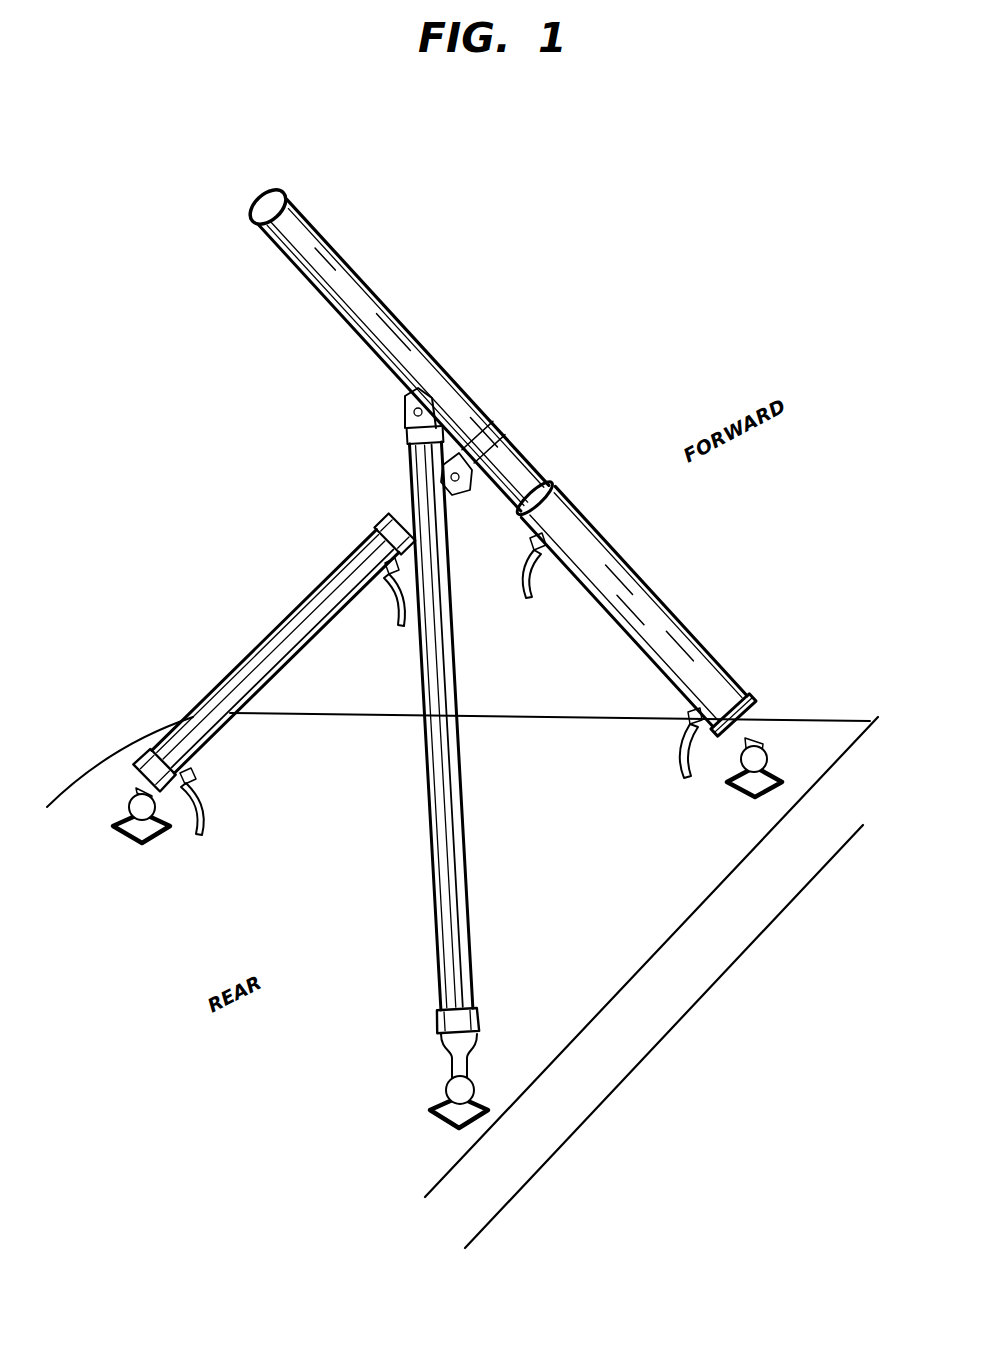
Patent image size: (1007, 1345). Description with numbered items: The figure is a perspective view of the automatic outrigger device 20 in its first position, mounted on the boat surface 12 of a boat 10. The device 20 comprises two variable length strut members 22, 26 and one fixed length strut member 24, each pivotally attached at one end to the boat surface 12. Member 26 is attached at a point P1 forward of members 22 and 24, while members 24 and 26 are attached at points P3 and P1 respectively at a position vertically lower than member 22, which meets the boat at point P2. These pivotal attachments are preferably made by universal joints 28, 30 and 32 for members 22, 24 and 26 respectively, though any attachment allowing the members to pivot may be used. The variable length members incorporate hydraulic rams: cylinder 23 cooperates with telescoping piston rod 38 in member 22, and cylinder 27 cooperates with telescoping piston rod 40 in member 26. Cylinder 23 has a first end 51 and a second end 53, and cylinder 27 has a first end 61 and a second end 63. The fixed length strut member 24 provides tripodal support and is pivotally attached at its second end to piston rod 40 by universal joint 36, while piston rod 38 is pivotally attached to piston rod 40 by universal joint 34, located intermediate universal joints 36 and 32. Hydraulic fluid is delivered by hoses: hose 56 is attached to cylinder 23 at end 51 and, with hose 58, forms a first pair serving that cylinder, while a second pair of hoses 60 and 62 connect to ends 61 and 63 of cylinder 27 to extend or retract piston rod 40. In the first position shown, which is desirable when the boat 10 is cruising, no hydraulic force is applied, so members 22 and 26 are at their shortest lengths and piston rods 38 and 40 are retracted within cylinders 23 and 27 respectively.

The boat 10 is at (713, 930).
The boat surface 12 is at (615, 967).
The automatic outrigger device 20 is at (540, 490).
The variable length strut member 22 is at (260, 707).
The cylinder 23 is at (272, 643).
The fixed length strut member 24 is at (485, 777).
The variable length strut member 26 is at (674, 636).
The cylinder 27 is at (673, 633).
The universal joint 28 is at (128, 840).
The universal joint 30 is at (479, 1102).
The universal joint 32 is at (765, 772).
The universal joint 34 is at (468, 452).
The universal joint 36 is at (410, 402).
The telescoping piston rod 38 is at (449, 505).
The telescoping piston rod 40 is at (337, 246).
The first end 51 is at (192, 776).
The second end 53 is at (386, 565).
The hose 56 is at (210, 812).
The hose 58 is at (400, 610).
The hose 60 is at (680, 762).
The first end 61 is at (690, 718).
The hose 62 is at (528, 597).
The second end 63 is at (530, 560).
The attachment point P1 is at (740, 787).
The attachment point P2 is at (124, 805).
The attachment point P3 is at (440, 1108).